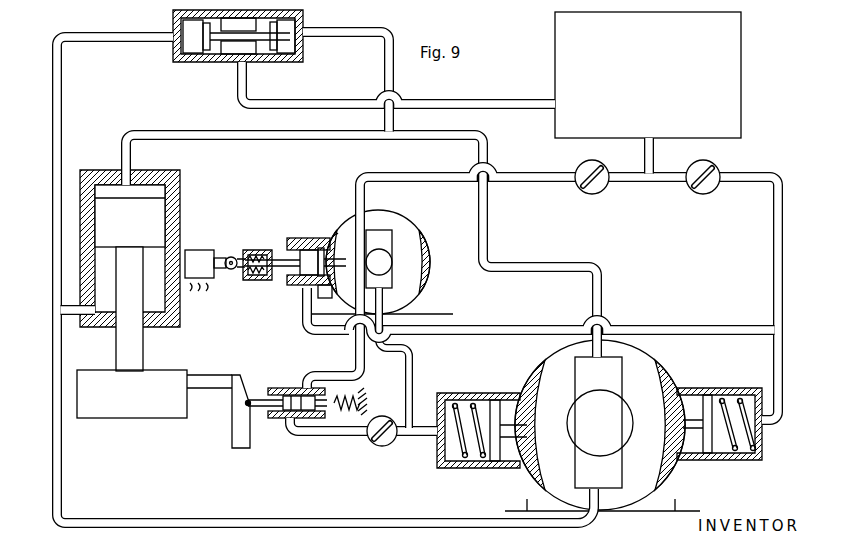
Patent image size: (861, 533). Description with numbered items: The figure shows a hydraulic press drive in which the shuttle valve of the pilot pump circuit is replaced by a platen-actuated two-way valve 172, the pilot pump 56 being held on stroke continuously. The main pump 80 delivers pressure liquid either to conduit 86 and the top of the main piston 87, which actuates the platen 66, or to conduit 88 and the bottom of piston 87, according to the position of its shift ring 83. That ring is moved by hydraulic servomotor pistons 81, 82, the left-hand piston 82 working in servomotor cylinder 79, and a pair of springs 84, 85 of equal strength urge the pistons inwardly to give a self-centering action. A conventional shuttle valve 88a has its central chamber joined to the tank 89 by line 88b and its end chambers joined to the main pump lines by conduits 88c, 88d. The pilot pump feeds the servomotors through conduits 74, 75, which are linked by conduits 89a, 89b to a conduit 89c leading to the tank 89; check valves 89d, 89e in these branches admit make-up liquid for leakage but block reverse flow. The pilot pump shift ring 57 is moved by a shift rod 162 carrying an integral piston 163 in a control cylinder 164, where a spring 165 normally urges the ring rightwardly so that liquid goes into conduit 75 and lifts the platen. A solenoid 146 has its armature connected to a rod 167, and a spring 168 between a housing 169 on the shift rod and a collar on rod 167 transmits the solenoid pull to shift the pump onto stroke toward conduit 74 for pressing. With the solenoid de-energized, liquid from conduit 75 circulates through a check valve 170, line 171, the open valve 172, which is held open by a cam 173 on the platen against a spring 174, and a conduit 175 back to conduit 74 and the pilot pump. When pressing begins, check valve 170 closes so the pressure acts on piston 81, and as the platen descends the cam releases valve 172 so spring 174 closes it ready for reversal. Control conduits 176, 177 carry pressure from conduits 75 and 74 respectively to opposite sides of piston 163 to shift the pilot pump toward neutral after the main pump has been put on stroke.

The pilot pump 56 is at (388, 209).
The shift ring 57 is at (420, 251).
The platen 66 is at (144, 395).
The conduit 74 is at (388, 333).
The conduit 75 is at (415, 374).
The servomotor cylinder 79 is at (437, 460).
The main pump 80 is at (637, 365).
The hydraulic servomotor piston 81 is at (715, 466).
The hydraulic servomotor piston 82 is at (495, 467).
The shift ring 83 is at (670, 392).
The spring 84 is at (728, 393).
The spring 85 is at (464, 465).
The conduit 86 is at (597, 301).
The main piston 87 is at (138, 233).
The conduit 88 is at (345, 506).
The shuttle valve 88a is at (170, 31).
The line 88b is at (522, 105).
The conduit 88c is at (389, 33).
The conduit 88d is at (93, 89).
The tank 89 is at (694, 86).
The conduit 89a is at (588, 193).
The conduit 89b is at (543, 180).
The conduit 89c is at (691, 155).
The check valve 89d is at (741, 209).
The check valve 89e is at (775, 259).
The actuator 146 is at (211, 242).
The shift rod 162 is at (292, 251).
The piston 163 is at (340, 233).
The control cylinder 164 is at (293, 290).
The spring 165 is at (312, 236).
The rod 167 is at (250, 243).
The spring 168 is at (263, 282).
The housing 169 is at (256, 247).
The check valve 170 is at (379, 446).
The line 171 is at (313, 434).
The two-way valve 172 is at (281, 387).
The cam 173 is at (232, 438).
The spring 174 is at (358, 412).
The conduit 175 is at (329, 372).
The conduit 176 is at (322, 301).
The conduit 177 is at (334, 339).